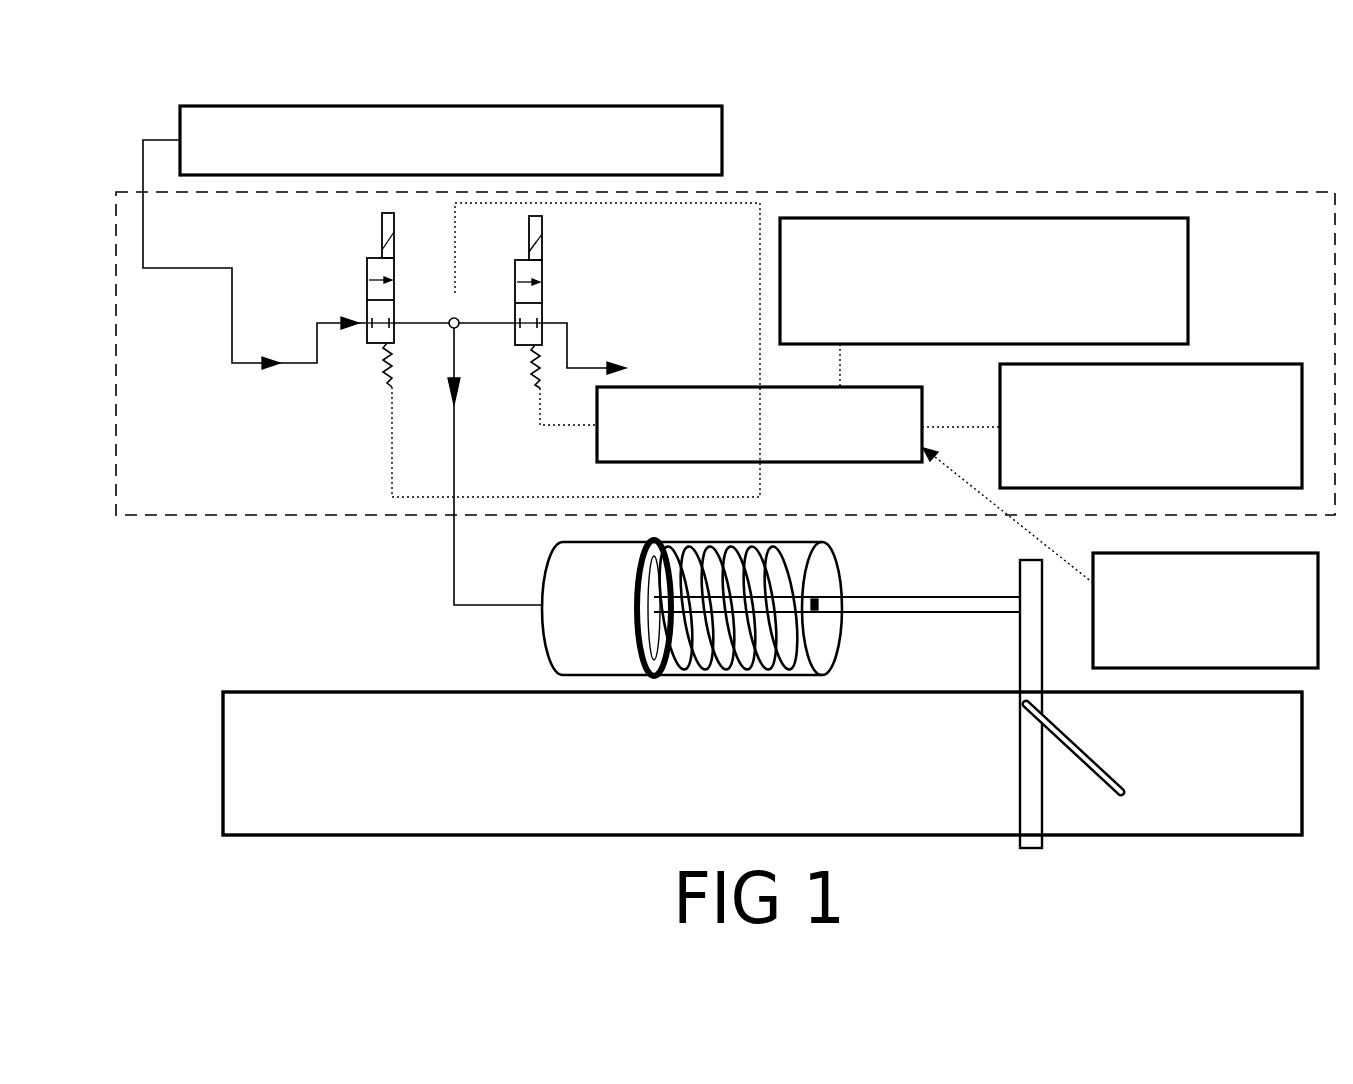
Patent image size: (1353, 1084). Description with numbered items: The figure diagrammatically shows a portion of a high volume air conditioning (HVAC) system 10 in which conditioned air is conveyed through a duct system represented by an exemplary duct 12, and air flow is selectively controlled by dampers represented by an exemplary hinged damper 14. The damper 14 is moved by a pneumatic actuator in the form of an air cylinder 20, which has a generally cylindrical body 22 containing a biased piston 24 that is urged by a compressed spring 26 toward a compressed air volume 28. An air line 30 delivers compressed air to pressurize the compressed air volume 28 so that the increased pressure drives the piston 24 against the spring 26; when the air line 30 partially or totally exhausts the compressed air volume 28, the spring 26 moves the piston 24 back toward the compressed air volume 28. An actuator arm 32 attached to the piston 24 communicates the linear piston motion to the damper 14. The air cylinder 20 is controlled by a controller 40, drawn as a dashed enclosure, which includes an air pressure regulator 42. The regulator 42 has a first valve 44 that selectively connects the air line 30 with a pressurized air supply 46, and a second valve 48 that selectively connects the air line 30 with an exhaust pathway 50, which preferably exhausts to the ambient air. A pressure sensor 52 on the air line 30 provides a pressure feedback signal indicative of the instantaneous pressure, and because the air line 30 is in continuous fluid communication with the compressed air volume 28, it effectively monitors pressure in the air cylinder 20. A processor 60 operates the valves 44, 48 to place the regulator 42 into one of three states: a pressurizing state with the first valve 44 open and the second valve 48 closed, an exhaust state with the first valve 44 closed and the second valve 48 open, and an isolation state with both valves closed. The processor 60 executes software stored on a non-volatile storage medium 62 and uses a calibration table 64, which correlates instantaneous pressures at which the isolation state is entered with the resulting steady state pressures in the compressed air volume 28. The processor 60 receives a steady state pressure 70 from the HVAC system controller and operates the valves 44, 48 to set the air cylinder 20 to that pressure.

The high volume air conditioning (HVAC) system 10 is at (198, 554).
The duct 12 is at (323, 838).
The damper 14 is at (1128, 758).
The air cylinder 20 is at (510, 652).
The cylindrical body 22 is at (842, 563).
The piston 24 is at (637, 582).
The compressed spring 26 is at (778, 657).
The compressed air volume 28 is at (609, 625).
The air line 30 is at (455, 580).
The actuator arm 32 is at (912, 596).
The controller 40 is at (792, 193).
The air pressure regulator 42 is at (320, 416).
The first valve 44 is at (368, 282).
The pressurized air supply 46 is at (696, 162).
The second valve 48 is at (542, 272).
The exhaust pathway 50 is at (568, 337).
The pressure sensor 52 is at (450, 318).
The processor 60 is at (884, 451).
The non-volatile storage medium 62 is at (1260, 478).
The calibration table 64 is at (1116, 282).
The steady state pressure 70 is at (1292, 652).